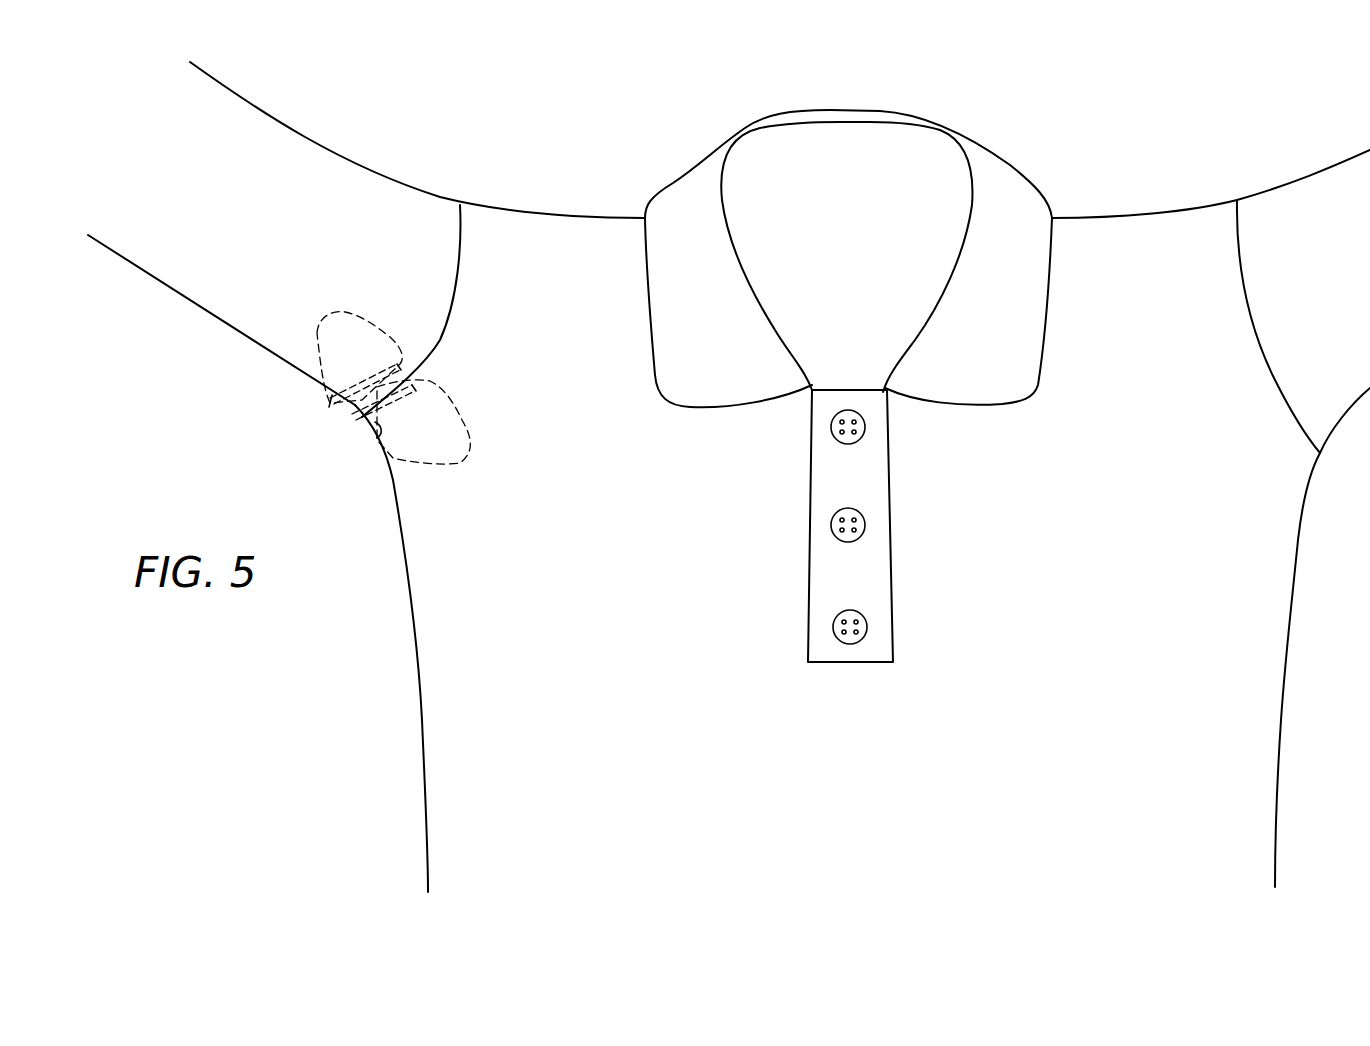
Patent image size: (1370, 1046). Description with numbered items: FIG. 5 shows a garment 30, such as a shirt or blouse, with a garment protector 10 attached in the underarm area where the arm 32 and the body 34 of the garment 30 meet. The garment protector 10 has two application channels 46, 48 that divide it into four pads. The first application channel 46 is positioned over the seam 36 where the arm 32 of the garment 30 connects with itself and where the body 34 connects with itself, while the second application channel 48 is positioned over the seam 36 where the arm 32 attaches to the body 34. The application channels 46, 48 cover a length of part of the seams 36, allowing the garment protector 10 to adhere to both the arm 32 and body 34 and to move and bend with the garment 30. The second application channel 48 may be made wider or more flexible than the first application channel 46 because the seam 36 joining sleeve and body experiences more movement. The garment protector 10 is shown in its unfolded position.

The garment 30 is at (1042, 147).
The arm 32 is at (153, 262).
The body 34 is at (450, 770).
The seam 36 is at (461, 228).
The first application channel 46 is at (322, 418).
The second application channel 48 is at (365, 452).
The garment protector 10 is at (353, 429).